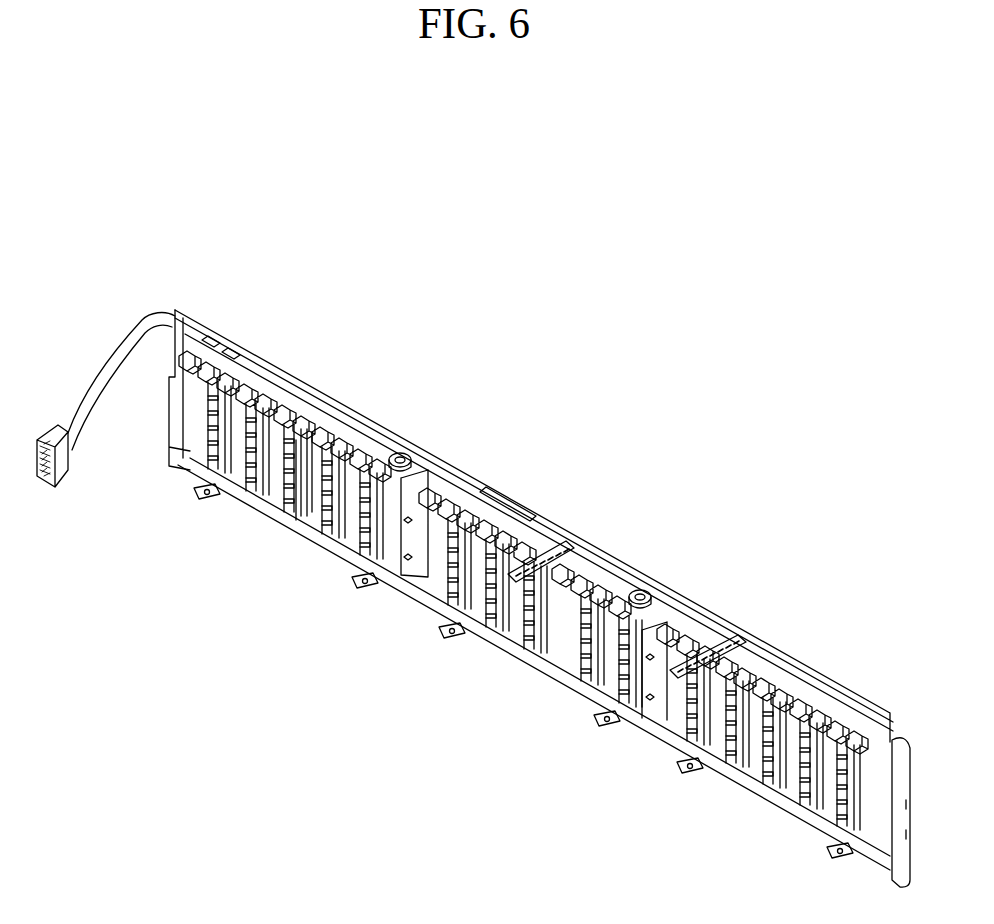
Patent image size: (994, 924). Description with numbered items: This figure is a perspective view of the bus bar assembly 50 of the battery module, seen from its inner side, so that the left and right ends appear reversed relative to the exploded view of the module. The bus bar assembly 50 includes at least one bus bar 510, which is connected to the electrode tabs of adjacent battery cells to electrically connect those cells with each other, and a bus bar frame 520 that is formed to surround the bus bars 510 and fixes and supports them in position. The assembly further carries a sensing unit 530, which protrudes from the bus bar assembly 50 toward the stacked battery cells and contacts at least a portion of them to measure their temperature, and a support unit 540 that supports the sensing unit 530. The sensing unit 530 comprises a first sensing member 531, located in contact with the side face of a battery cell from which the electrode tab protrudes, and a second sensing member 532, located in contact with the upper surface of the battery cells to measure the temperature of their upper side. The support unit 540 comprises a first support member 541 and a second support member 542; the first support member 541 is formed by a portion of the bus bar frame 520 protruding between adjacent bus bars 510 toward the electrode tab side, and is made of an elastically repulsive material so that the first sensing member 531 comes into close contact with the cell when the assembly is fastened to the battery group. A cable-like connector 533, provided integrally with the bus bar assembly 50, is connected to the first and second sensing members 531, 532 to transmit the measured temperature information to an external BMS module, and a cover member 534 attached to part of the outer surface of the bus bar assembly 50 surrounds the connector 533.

The bus bar assembly 50 is at (42, 147).
The bus bar 510 is at (830, 793).
The bus bar frame 520 is at (721, 778).
The sensing unit 530 is at (291, 282).
The first sensing member 531 is at (303, 436).
The second sensing member 532 is at (432, 500).
The connector 533 is at (122, 353).
The cover member 534 is at (212, 368).
The support unit 540 is at (522, 410).
The first support member 541 is at (497, 497).
The second support member 542 is at (543, 560).